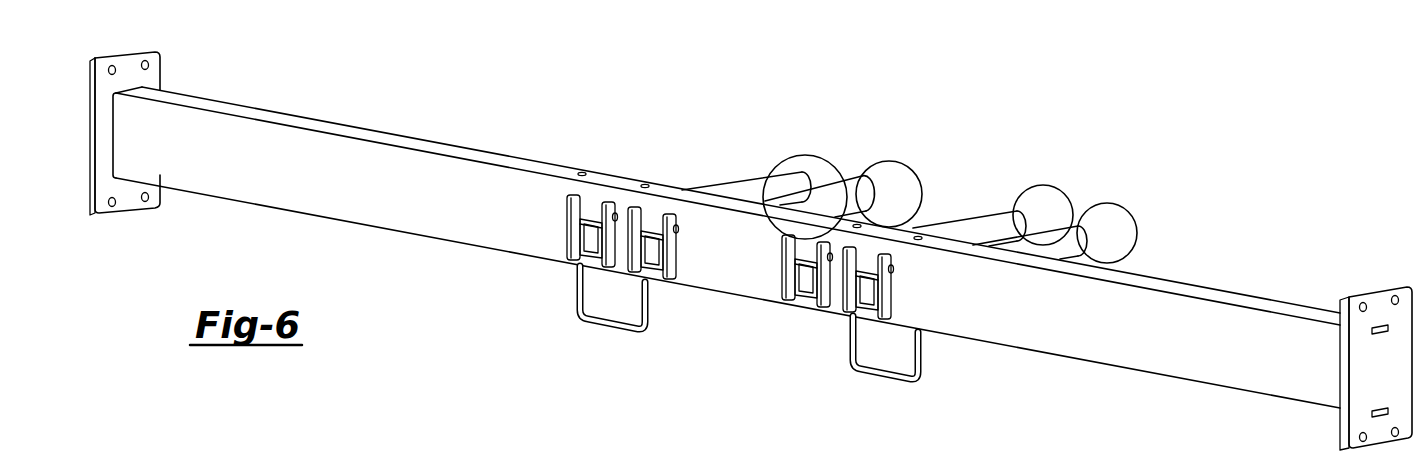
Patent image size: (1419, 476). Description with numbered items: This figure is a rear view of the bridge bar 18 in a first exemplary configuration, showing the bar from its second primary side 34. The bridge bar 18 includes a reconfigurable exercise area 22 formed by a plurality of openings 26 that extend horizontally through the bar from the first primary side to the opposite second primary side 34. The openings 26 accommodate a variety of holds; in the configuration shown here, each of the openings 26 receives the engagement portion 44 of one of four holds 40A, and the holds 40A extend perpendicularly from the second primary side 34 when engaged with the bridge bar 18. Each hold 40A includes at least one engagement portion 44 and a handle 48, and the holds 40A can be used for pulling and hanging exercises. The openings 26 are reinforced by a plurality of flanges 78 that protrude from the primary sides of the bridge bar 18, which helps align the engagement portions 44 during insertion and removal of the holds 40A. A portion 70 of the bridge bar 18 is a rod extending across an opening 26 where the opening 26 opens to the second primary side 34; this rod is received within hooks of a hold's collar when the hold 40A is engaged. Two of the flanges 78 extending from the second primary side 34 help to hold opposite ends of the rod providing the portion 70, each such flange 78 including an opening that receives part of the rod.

The bridge bar 18 is at (751, 250).
The second primary side 34 is at (321, 184).
The reconfigurable exercise area 22 is at (527, 291).
The openings 26 is at (695, 246).
The engagement portion 44 is at (776, 270).
The portion of the bridge bar 70 is at (805, 253).
The flanges 78 is at (763, 227).
The holds 40A is at (1117, 227).
The handle 48 is at (1076, 183).